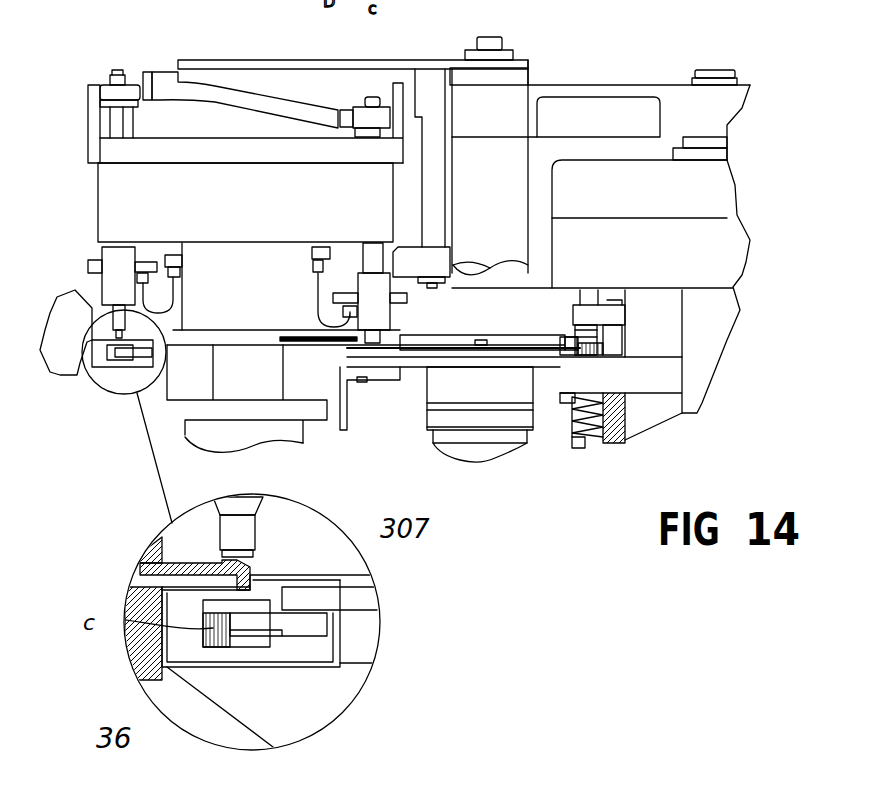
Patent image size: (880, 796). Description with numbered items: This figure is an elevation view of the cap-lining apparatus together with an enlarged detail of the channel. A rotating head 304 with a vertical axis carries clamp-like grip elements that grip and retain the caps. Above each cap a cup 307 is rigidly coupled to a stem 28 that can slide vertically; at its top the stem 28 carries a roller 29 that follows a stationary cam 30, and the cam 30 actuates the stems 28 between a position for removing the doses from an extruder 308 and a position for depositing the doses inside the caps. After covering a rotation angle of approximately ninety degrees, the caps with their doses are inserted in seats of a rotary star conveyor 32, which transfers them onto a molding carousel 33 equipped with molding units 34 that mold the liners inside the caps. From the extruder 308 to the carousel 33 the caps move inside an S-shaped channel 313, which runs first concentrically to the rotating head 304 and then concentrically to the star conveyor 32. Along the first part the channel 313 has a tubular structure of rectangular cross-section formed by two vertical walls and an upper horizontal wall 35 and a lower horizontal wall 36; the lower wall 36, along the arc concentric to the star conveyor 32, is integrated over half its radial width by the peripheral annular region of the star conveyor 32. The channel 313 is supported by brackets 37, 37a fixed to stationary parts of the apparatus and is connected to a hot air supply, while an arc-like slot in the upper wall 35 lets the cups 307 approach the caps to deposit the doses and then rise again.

The stem 28 is at (115, 125).
The roller 29 is at (147, 87).
The stationary cam 30 is at (160, 92).
The rotating head 304 is at (83, 222).
The extruder 308 is at (58, 330).
The channel 313 is at (114, 381).
The upper horizontal wall 35 is at (390, 330).
The rotary star conveyor 32 is at (500, 305).
The molding carousel 33 is at (755, 255).
The molding unit 34 is at (632, 335).
The bracket 37a is at (383, 373).
The cup 307 is at (347, 520).
The lower horizontal wall 36 is at (207, 670).
The bracket 37 is at (275, 712).